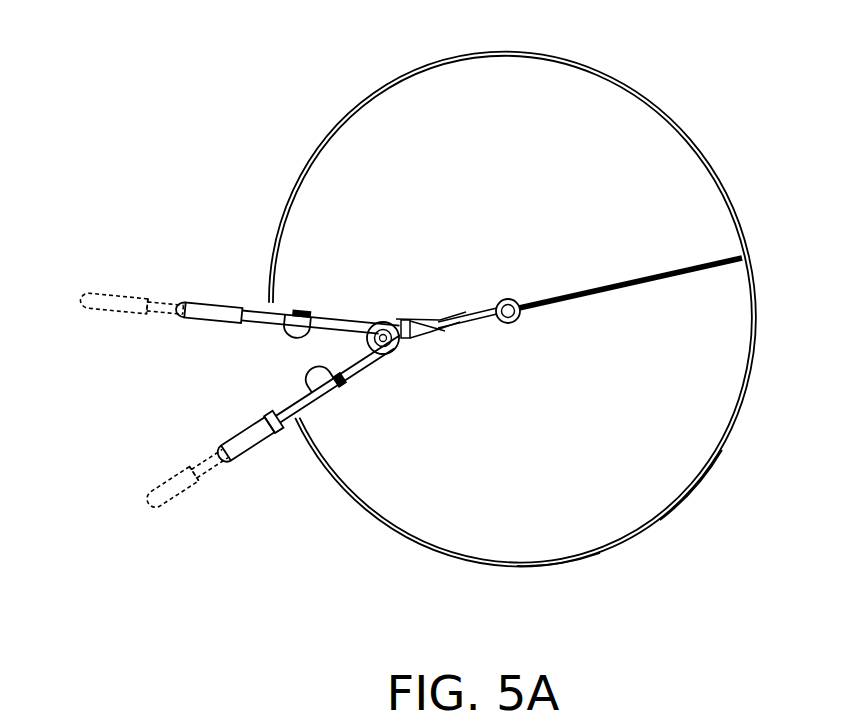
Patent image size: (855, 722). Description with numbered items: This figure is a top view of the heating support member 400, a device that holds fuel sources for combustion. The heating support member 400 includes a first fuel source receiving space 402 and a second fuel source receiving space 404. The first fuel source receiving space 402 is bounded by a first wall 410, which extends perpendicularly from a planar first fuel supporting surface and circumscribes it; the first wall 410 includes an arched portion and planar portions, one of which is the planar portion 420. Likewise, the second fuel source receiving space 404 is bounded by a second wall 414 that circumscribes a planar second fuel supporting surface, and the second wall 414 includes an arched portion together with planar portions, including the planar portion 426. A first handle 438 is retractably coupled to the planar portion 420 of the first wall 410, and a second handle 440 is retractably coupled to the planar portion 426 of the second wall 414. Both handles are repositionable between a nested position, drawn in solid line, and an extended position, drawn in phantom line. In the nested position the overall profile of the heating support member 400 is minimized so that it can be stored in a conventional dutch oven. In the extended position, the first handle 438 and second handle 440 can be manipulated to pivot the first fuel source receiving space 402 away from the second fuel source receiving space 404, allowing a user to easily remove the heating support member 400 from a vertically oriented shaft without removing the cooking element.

The heating support member 400 is at (212, 90).
The first fuel source receiving space 402 is at (643, 122).
The second fuel source receiving space 404 is at (560, 542).
The first wall 410 is at (352, 113).
The second wall 414 is at (663, 522).
The planar portion 420 is at (325, 316).
The planar portion 426 is at (340, 389).
The first handle 438 is at (203, 305).
The second handle 440 is at (183, 485).